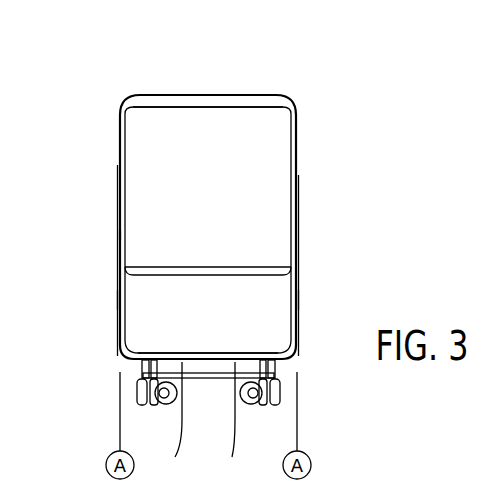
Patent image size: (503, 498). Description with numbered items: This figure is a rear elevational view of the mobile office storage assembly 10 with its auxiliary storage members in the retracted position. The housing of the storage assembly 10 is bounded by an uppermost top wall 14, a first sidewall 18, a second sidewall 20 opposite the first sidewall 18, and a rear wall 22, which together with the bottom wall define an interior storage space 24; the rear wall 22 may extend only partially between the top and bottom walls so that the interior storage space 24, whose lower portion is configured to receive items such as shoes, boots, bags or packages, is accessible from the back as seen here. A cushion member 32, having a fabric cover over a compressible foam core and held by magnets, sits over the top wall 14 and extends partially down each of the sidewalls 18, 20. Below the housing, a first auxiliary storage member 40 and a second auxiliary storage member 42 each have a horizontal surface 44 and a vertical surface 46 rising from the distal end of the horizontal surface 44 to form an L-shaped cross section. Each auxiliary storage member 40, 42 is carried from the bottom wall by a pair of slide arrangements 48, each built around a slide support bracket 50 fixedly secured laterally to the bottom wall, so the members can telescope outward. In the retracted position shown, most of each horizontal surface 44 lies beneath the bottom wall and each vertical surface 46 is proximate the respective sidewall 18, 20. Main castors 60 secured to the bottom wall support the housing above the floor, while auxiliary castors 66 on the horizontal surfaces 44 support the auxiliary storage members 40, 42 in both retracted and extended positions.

The mobile office storage assembly 10 is at (306, 77).
The top wall 14 is at (179, 107).
The cushion member 32 is at (213, 92).
The first sidewall 18 is at (120, 167).
The second sidewall 20 is at (296, 167).
The rear wall 22 is at (277, 222).
The first auxiliary storage member 40 is at (116, 232).
The second auxiliary storage member 42 is at (302, 259).
The vertical surface 46 is at (298, 296).
The interior storage space 24 is at (220, 326).
The slide support bracket 50 is at (227, 370).
The slide arrangement 48 is at (207, 382).
The horizontal surface 44 is at (200, 422).
The main castor 60 is at (137, 393).
The auxiliary castor 66 is at (170, 405).